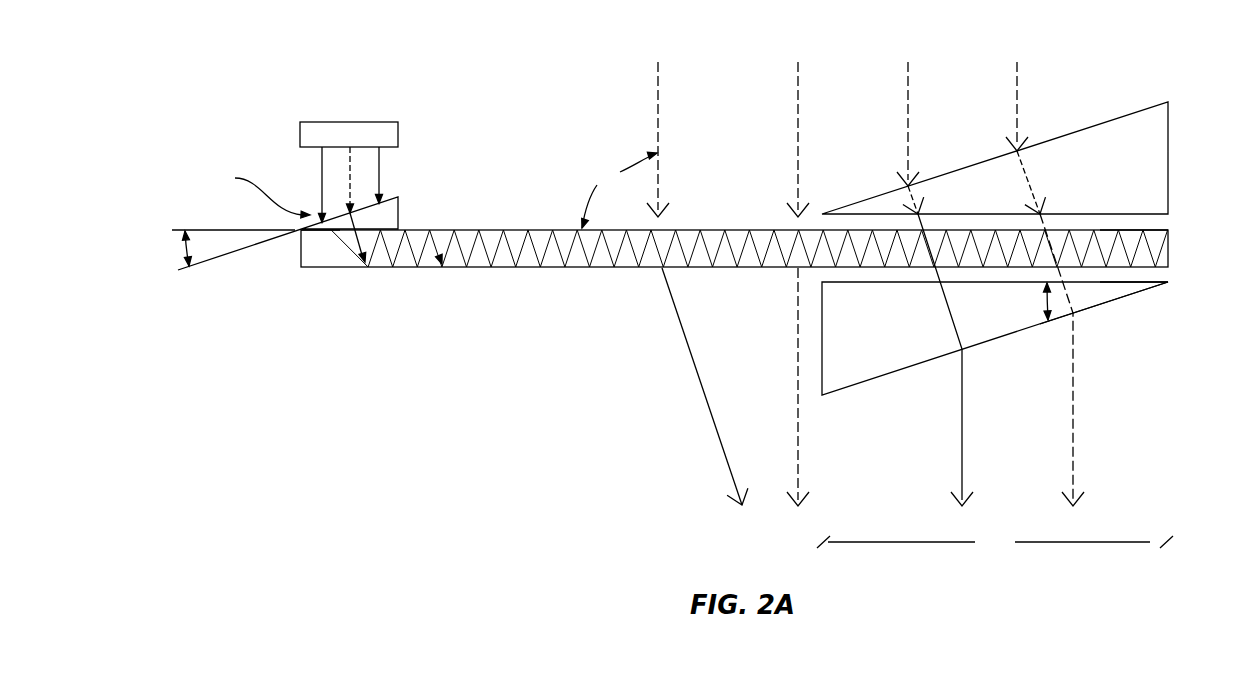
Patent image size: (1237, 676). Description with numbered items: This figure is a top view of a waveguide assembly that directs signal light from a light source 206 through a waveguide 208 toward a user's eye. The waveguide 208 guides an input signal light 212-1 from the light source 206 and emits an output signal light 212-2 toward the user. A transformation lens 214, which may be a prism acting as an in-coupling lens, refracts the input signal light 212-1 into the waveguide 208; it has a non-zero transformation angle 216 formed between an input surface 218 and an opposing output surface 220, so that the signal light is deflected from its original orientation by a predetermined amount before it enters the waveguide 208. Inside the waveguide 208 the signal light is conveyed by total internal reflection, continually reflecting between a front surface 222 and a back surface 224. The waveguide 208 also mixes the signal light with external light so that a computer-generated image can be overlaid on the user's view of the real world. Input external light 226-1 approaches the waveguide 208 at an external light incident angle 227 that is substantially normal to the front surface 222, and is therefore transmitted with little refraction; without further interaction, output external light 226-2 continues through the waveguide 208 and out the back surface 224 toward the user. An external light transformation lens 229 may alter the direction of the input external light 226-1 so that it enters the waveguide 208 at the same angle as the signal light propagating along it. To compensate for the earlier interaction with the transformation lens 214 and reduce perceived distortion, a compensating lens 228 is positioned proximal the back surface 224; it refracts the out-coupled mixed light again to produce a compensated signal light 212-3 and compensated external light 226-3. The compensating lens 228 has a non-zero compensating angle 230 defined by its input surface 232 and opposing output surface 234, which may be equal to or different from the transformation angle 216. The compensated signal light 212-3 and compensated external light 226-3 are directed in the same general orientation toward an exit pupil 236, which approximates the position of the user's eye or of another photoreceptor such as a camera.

The light source 206 is at (397, 122).
The input signal light 212-1 is at (380, 170).
The input surface 218 is at (398, 197).
The transformation lens 214 is at (256, 194).
The transformation angle 216 is at (183, 248).
The front surface 222 is at (495, 230).
The back surface 224 is at (425, 268).
The output surface 220 is at (336, 236).
The external light incident angle 227 is at (619, 190).
The input external light 226-1 is at (660, 118).
The output external light 226-2 is at (799, 433).
The compensated external light 226-3 is at (1074, 413).
The output signal light 212-2 is at (718, 435).
The compensated signal light 212-3 is at (963, 433).
The external light transformation lens 229 is at (1169, 117).
The waveguide 208 is at (1158, 223).
The compensating lens 228 is at (1148, 303).
The input surface 232 is at (1166, 282).
The output surface 234 is at (1095, 305).
The compensating angle 230 is at (1036, 302).
The exit pupil 236 is at (995, 543).